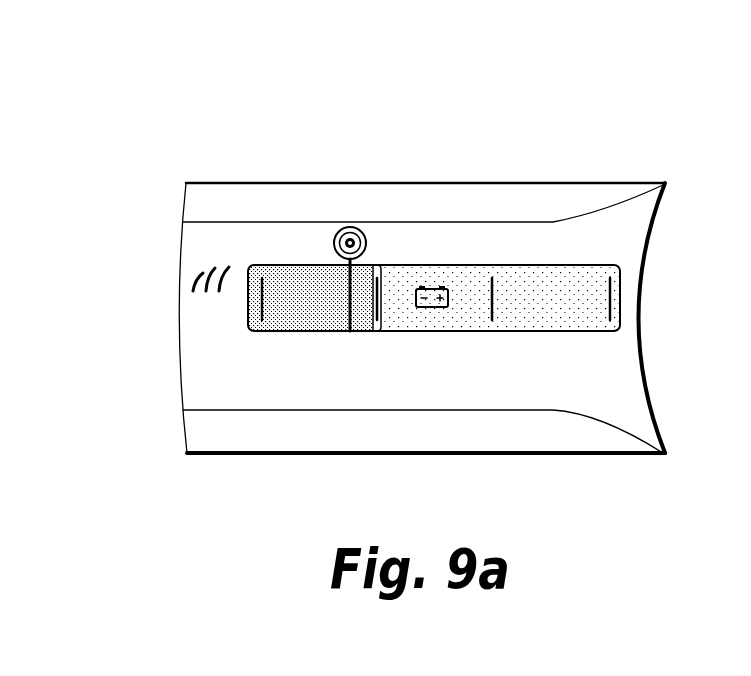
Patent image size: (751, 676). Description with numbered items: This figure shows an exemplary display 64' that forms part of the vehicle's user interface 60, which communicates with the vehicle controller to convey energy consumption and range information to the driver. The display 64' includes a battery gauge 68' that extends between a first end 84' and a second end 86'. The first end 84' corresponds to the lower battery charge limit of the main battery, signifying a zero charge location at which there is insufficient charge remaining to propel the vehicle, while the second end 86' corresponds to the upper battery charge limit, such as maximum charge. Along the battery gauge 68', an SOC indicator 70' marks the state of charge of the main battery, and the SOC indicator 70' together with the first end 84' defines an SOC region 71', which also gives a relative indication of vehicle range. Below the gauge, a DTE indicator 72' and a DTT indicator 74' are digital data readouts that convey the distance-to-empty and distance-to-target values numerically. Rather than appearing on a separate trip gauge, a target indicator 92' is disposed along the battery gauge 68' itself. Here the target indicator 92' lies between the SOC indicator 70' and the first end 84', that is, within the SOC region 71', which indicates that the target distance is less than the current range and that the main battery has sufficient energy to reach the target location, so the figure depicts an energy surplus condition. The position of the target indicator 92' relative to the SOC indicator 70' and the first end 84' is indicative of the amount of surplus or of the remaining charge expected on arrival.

The user interface 60 is at (207, 68).
The display 64' is at (383, 318).
The battery gauge 68' is at (434, 239).
The SOC indicator 70' is at (435, 239).
The SOC region 71' is at (300, 380).
The DTE indicator 72' is at (508, 410).
The DTT indicator 74' is at (502, 339).
The first end 84' is at (200, 252).
The second end 86' is at (668, 276).
The target indicator 92' is at (317, 202).